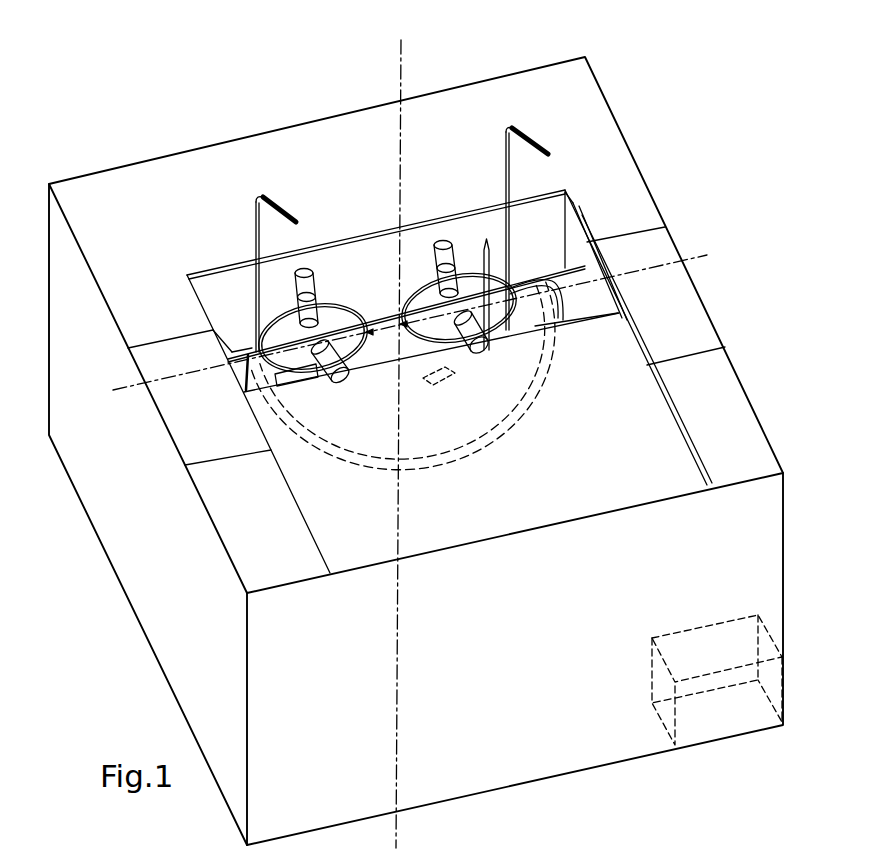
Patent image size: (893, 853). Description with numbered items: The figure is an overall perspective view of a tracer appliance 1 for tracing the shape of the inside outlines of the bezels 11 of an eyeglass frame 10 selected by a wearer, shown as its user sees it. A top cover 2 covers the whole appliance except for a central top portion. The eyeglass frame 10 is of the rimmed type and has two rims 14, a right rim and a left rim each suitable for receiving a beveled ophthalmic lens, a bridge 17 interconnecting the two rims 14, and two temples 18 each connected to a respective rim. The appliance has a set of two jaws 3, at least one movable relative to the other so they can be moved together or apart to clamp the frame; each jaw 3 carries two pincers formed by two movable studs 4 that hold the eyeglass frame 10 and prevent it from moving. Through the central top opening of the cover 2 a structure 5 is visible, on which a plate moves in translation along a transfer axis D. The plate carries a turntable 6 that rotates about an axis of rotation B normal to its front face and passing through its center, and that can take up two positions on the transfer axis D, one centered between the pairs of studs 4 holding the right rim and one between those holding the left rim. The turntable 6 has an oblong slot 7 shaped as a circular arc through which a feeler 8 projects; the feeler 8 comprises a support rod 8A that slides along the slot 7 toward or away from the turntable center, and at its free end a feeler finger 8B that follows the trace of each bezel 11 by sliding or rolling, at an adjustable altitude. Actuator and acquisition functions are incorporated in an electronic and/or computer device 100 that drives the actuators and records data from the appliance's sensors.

The tracer appliance 1 is at (165, 103).
The top cover 2 is at (733, 390).
The jaws 3 is at (208, 277).
The movable studs 4 is at (293, 314).
The structure 5 is at (550, 308).
The turntable 6 is at (240, 375).
The oblong slot 7 is at (440, 366).
The feeler 8 is at (500, 264).
The support rod 8A is at (531, 370).
The feeler finger 8B is at (503, 215).
The eyeglass frame 10 is at (300, 198).
The bezels 11 is at (282, 320).
The rims 14 is at (323, 383).
The bridge 17 is at (362, 302).
The temples 18 is at (253, 215).
The electronic and/or computer device 100 is at (720, 728).
The axis of rotation B is at (401, 42).
The transfer axis D is at (113, 392).